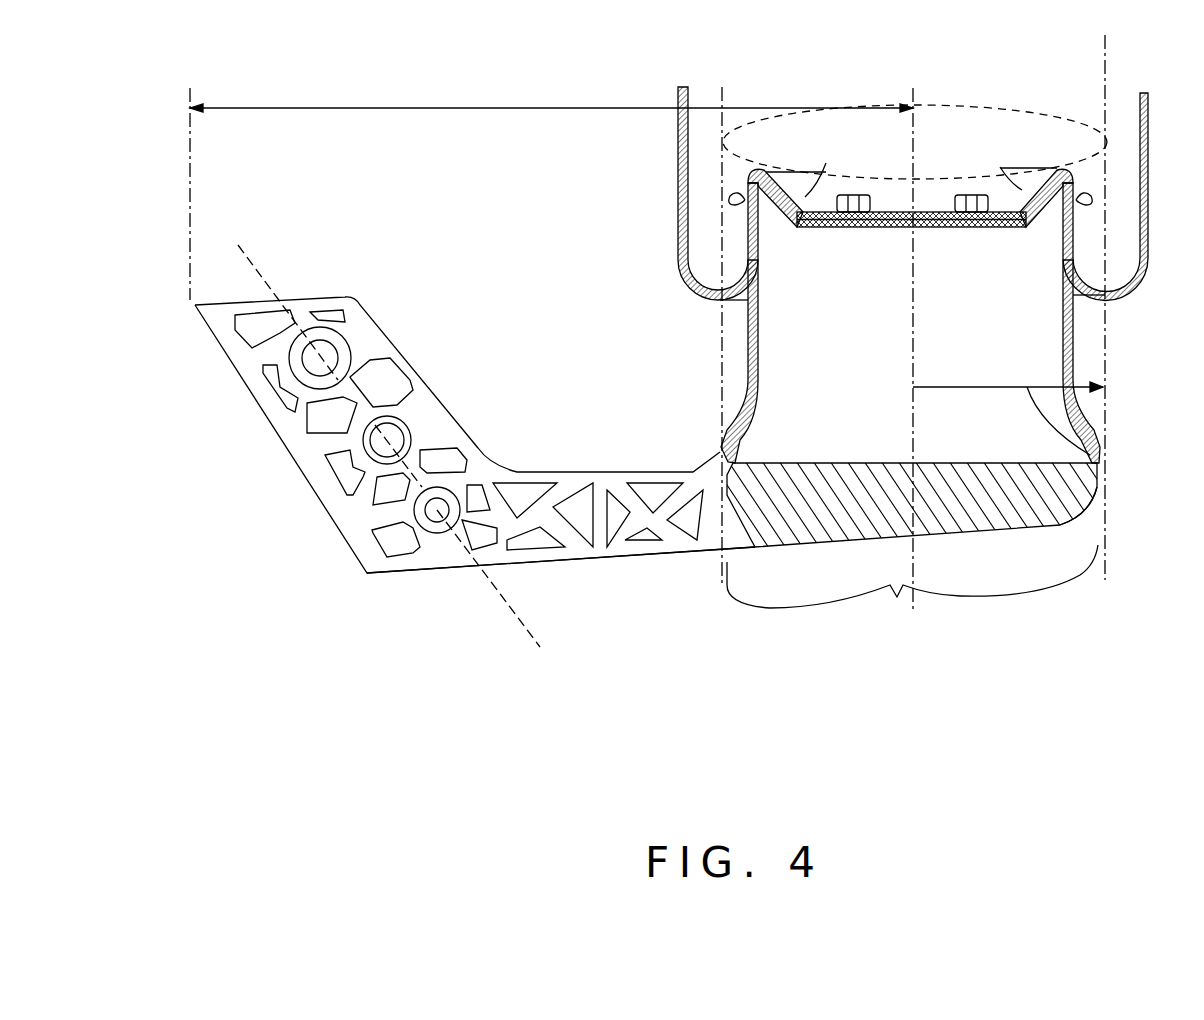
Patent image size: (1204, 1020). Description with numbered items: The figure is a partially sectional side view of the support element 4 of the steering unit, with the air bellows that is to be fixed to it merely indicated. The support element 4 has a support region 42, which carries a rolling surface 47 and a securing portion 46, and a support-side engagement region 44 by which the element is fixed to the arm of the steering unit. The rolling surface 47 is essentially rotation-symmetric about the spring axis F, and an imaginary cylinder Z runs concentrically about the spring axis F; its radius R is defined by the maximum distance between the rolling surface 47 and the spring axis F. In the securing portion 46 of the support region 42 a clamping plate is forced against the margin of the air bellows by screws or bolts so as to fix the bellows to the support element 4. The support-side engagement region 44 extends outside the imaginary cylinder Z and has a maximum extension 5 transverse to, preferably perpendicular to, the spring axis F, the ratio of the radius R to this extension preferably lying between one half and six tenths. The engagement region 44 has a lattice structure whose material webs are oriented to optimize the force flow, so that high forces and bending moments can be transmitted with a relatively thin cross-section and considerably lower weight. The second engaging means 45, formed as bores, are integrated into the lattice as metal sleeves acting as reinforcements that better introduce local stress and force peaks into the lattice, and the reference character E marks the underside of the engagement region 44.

The support element 4 is at (572, 270).
The maximum extension 5 is at (497, 108).
The support region 42 is at (897, 603).
The support-side engagement region 44 is at (500, 560).
The second engaging means 45 is at (353, 343).
The securing portion 46 is at (1030, 220).
The rolling surface 47 is at (1073, 342).
The spring axis F is at (915, 283).
The imaginary cylinder Z is at (1105, 308).
The radius R is at (1097, 447).
The plate bottom edge / plane E is at (480, 562).